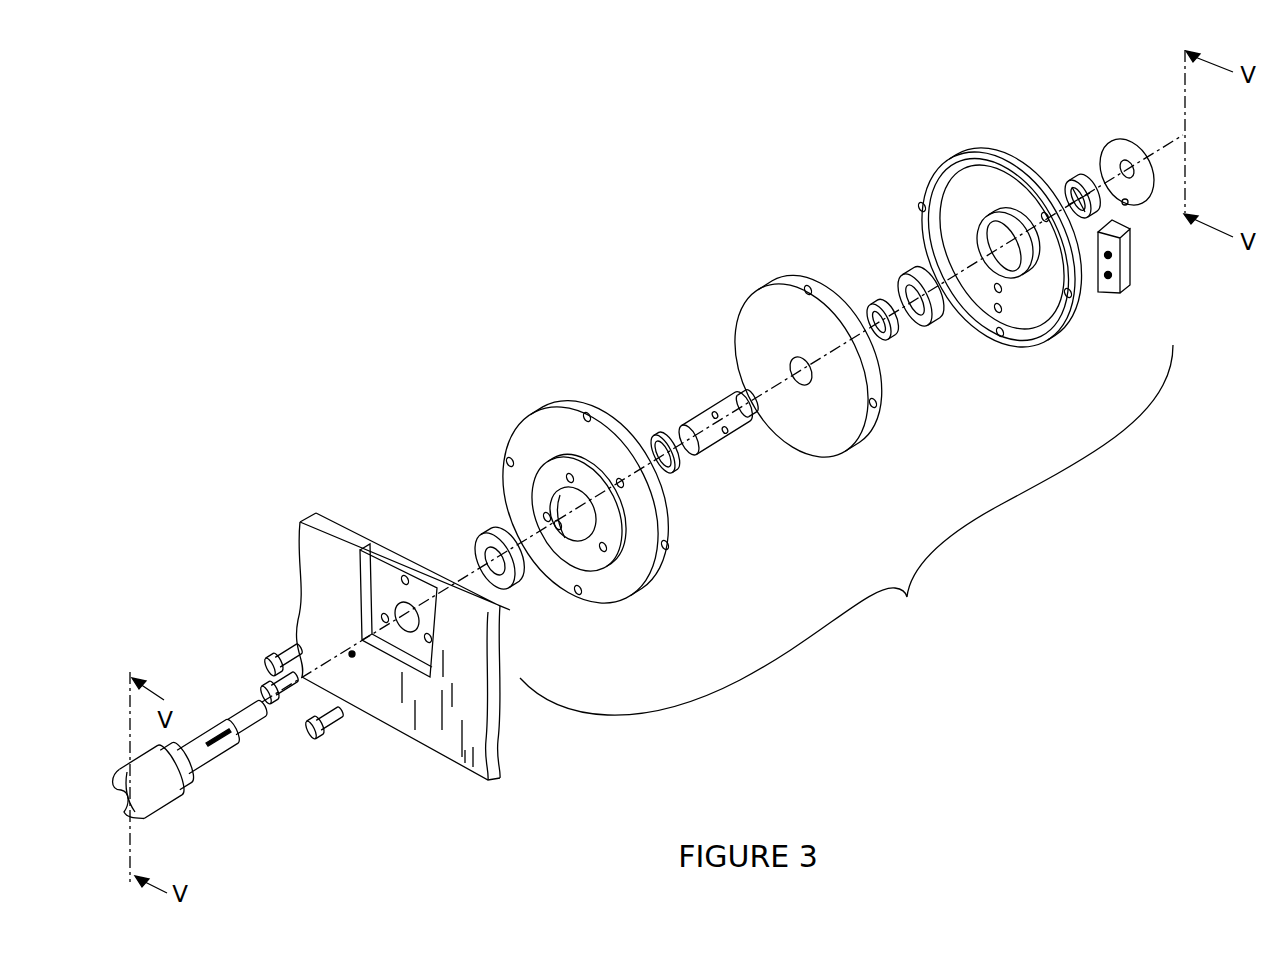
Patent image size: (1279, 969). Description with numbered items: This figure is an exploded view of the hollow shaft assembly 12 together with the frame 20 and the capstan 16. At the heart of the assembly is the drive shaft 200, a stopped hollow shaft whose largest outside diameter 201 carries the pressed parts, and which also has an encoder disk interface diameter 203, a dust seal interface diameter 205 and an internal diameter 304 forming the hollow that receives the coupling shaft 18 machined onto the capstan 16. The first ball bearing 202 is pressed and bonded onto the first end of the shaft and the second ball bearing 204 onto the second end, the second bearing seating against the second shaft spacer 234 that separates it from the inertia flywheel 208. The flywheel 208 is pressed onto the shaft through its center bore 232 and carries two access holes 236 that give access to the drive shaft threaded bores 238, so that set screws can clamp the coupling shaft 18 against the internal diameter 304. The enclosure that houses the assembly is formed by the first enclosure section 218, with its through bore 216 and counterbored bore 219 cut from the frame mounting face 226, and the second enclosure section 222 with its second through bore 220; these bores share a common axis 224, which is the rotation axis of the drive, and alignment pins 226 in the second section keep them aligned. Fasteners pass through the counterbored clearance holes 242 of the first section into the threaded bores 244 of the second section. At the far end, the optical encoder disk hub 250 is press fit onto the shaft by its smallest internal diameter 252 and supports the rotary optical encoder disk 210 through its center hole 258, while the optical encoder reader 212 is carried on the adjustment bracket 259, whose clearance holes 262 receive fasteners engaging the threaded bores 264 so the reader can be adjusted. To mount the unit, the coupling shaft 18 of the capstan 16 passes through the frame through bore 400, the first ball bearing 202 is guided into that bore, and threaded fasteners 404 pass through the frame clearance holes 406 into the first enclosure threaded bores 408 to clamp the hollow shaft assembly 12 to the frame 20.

The hollow shaft assembly 12 is at (846, 530).
The capstan 16 is at (175, 758).
The coupling shaft 18 is at (203, 752).
The frame 20 is at (500, 784).
The drive shaft 200 is at (732, 444).
The largest outside diameter 201 is at (708, 437).
The first ball bearing 202 is at (502, 535).
The encoder disk interface diameter 203 is at (745, 398).
The second ball bearing 204 is at (905, 285).
The dust seal interface diameter 205 is at (755, 407).
The inertia flywheel 208 is at (788, 362).
The rotary optical encoder disk 210 is at (1136, 162).
The optical encoder reader 212 is at (1080, 188).
The through bore 216 is at (761, 441).
The first enclosure section 218 is at (657, 573).
The counterbored bore 219 is at (665, 545).
The second through bore 220 is at (994, 268).
The second enclosure section 222 is at (999, 295).
The common axis 224 is at (353, 657).
The frame mounting face 226 is at (1068, 297).
The center bore 232 is at (790, 358).
The second shaft spacer 234 is at (896, 340).
The access holes 236 is at (808, 287).
The threaded bores 238 is at (730, 428).
The counterbored clearance holes 242 is at (505, 458).
The threaded bores 244 is at (999, 292).
The optical encoder disk hub 250 is at (1068, 190).
The smallest internal diameter 252 is at (990, 124).
The center hole 258 is at (1135, 176).
The adjustment bracket 259 is at (1120, 252).
The adjustment bracket clearance holes 262 is at (1139, 289).
The threaded bores 264 is at (1000, 312).
The internal diameter 304 is at (693, 458).
The frame through bore 400 is at (397, 608).
The threaded fasteners 404 is at (320, 737).
The frame clearance holes 406 is at (405, 578).
The first separable enclosure threaded bores 408 is at (548, 523).